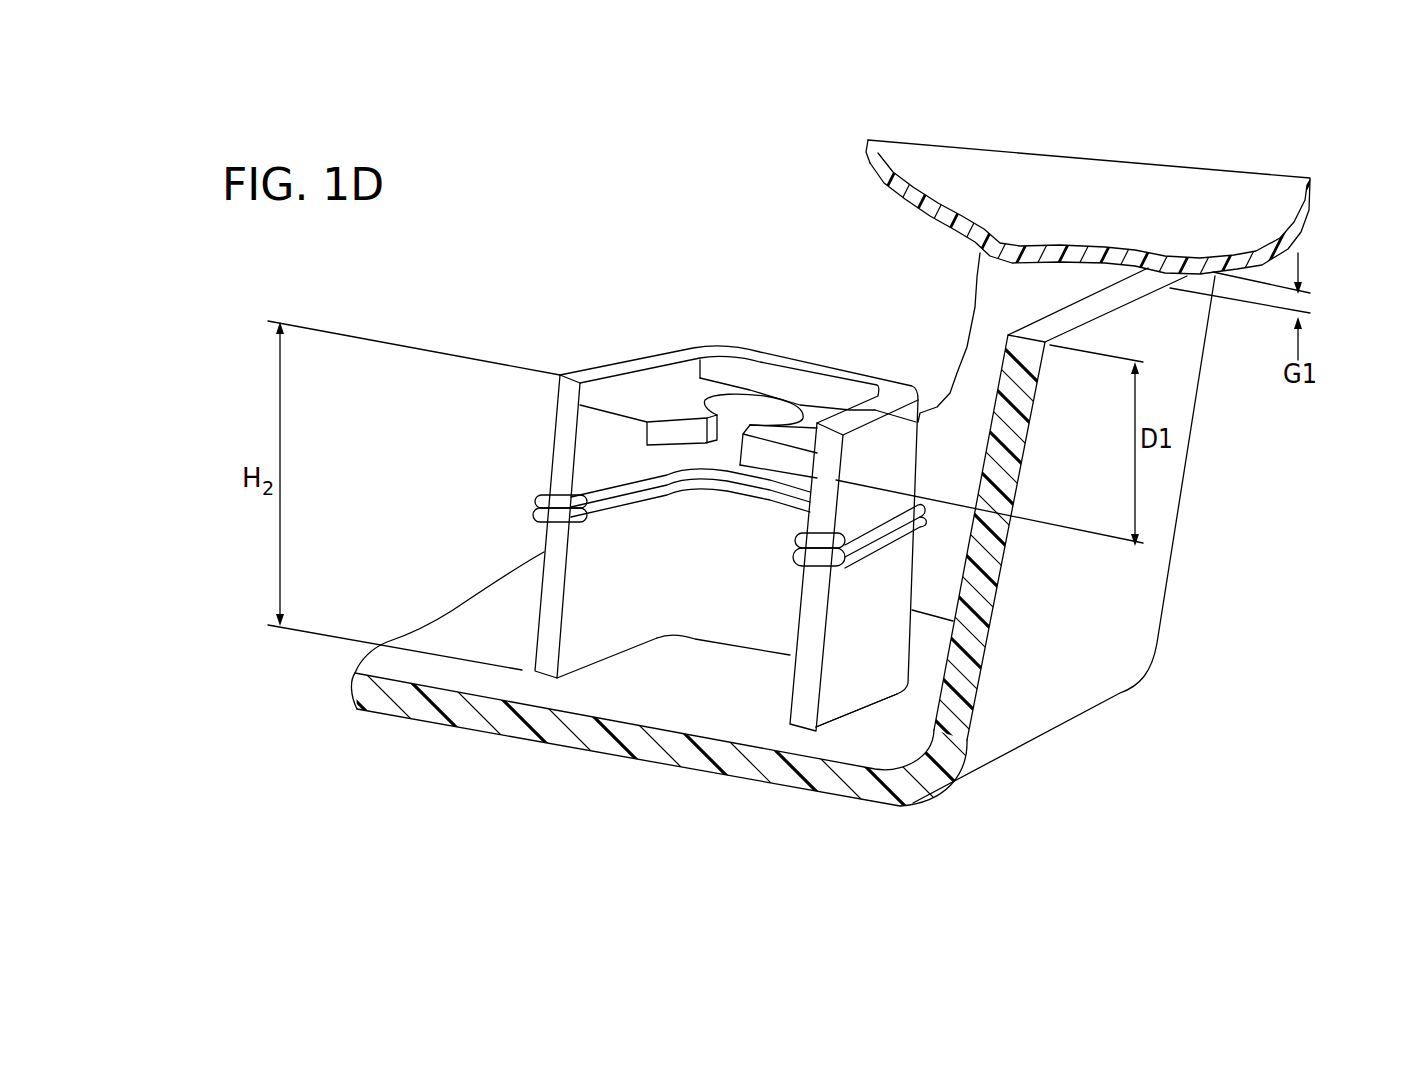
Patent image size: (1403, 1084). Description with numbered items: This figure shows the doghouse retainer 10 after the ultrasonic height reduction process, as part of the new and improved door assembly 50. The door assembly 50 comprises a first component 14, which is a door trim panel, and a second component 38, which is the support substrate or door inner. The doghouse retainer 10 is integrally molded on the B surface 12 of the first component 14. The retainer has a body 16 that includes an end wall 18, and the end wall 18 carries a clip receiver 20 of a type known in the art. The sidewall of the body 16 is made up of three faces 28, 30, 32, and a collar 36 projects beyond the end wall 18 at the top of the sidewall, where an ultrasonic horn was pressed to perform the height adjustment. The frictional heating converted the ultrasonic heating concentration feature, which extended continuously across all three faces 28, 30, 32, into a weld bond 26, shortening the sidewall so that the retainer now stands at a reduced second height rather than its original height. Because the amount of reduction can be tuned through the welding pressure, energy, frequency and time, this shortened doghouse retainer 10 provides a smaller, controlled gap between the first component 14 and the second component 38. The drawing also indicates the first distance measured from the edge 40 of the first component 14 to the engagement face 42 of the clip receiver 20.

The doghouse retainer 10 is at (610, 335).
The B surface 12 is at (462, 635).
The first component 14 is at (1122, 597).
The body 16 is at (522, 446).
The end wall 18 is at (667, 405).
The clip receiver 20 is at (775, 412).
The weld bond 26 is at (575, 500).
The face 28 is at (593, 630).
The face 30 is at (740, 613).
The face 32 is at (862, 652).
The collar 36 is at (751, 353).
The second component 38 is at (1110, 187).
The edge 40 is at (1050, 323).
The engagement face 42 is at (787, 437).
The door assembly 50 is at (1250, 115).